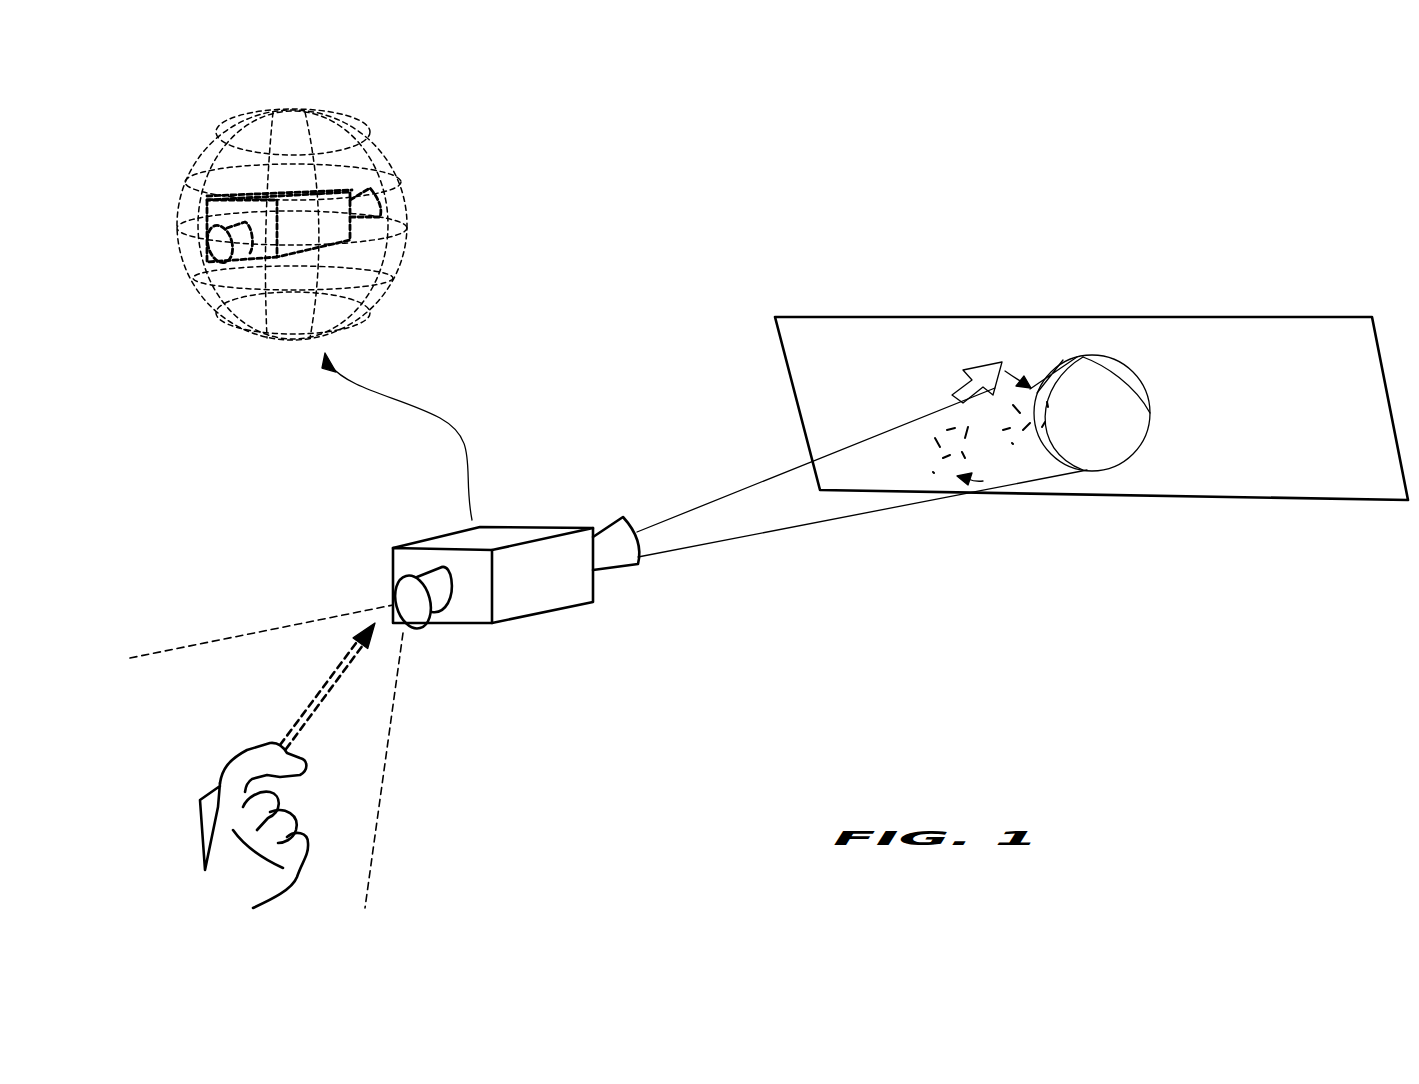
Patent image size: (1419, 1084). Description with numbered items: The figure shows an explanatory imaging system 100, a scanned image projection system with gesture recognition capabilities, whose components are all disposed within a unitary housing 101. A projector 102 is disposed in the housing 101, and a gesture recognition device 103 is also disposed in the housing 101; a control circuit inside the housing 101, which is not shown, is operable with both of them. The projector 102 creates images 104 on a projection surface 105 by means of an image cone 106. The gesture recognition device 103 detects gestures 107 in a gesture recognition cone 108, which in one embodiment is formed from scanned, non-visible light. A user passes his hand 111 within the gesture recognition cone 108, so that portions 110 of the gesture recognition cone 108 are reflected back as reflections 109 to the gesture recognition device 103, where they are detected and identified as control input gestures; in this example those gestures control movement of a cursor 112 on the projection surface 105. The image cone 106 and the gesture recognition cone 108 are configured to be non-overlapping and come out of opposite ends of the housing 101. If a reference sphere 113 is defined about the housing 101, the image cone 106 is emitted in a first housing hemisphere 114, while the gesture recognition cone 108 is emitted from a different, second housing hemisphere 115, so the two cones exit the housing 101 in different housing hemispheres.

The imaging system 100 is at (553, 642).
The housing 101 is at (502, 527).
The projector 102 is at (618, 555).
The gesture recognition device 103 is at (433, 587).
The images 104 is at (1150, 413).
The projection surface 105 is at (1237, 316).
The image cone 106 is at (678, 512).
The gestures 107 is at (315, 723).
The gesture recognition cone 108 is at (248, 633).
The reflections 109 is at (312, 700).
The portions 110 is at (353, 670).
The hand 111 is at (198, 815).
The cursor 112 is at (966, 374).
The reference sphere 113 is at (393, 232).
The first housing hemisphere 114 is at (378, 159).
The second housing hemisphere 115 is at (186, 184).